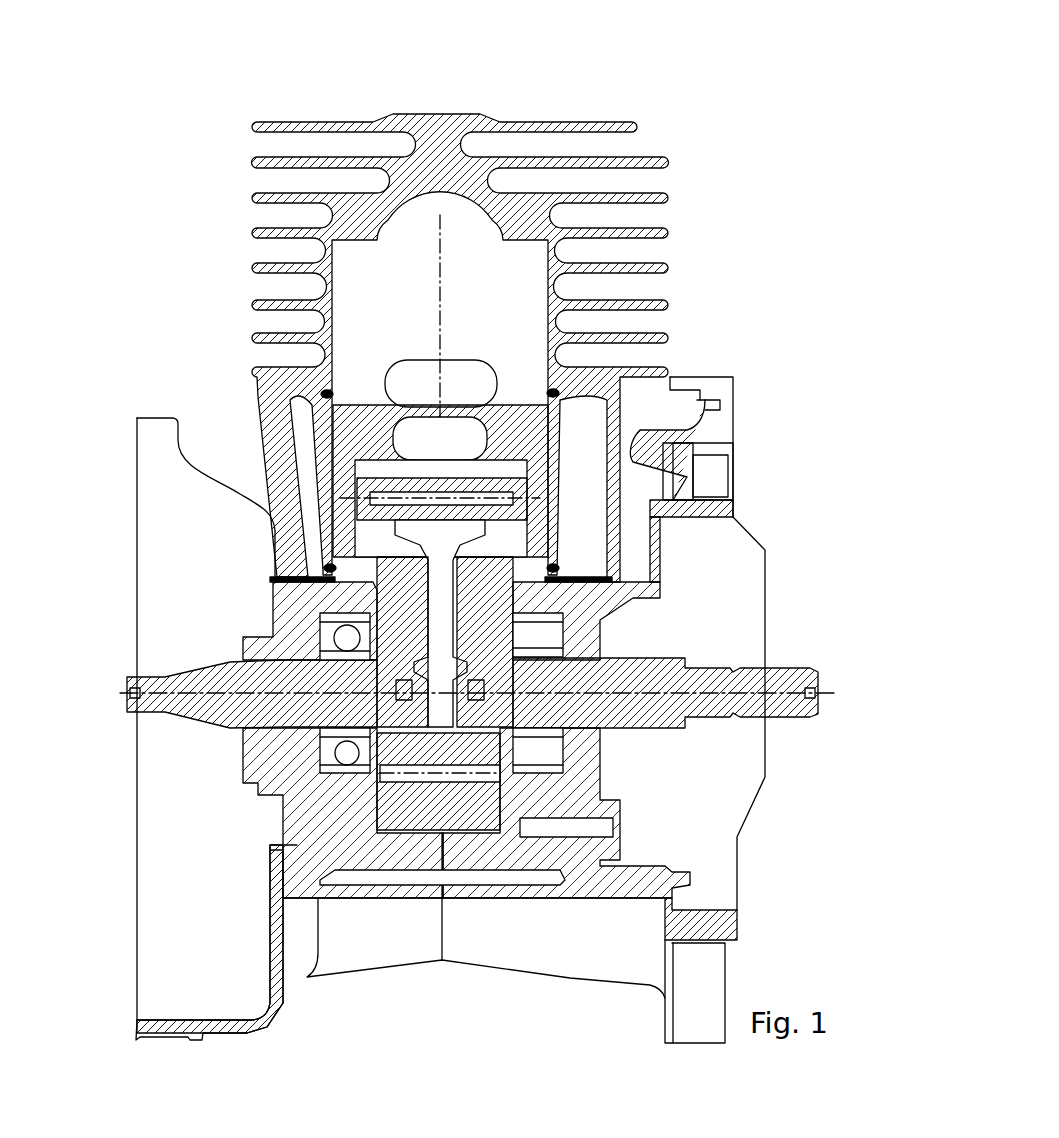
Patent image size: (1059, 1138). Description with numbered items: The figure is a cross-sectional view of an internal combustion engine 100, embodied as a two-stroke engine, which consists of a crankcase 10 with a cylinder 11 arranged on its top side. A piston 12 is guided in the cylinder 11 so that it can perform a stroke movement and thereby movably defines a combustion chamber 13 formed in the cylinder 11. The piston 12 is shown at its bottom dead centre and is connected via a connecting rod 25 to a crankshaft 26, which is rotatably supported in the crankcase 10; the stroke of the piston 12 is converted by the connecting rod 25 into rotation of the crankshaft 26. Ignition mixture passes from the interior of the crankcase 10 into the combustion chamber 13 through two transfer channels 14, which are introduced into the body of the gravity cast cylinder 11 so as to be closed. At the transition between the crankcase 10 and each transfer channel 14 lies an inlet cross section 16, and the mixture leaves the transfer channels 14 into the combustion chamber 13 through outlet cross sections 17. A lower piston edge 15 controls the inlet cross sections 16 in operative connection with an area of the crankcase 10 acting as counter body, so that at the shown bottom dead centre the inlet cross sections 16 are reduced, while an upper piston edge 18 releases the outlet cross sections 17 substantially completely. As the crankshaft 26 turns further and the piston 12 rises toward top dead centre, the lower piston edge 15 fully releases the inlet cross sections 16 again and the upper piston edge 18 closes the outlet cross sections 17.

The internal combustion engine 100 is at (717, 117).
The crankcase 10 is at (607, 605).
The cylinder 11 is at (655, 268).
The piston 12 is at (365, 400).
The combustion chamber 13 is at (397, 297).
The transfer channel 14 is at (298, 468).
The lower piston edge 15 is at (275, 577).
The inlet cross section 16 is at (327, 568).
The outlet cross section 17 is at (330, 393).
The upper piston edge 18 is at (763, 405).
The connecting rod 25 is at (443, 632).
The crankshaft 26 is at (707, 712).